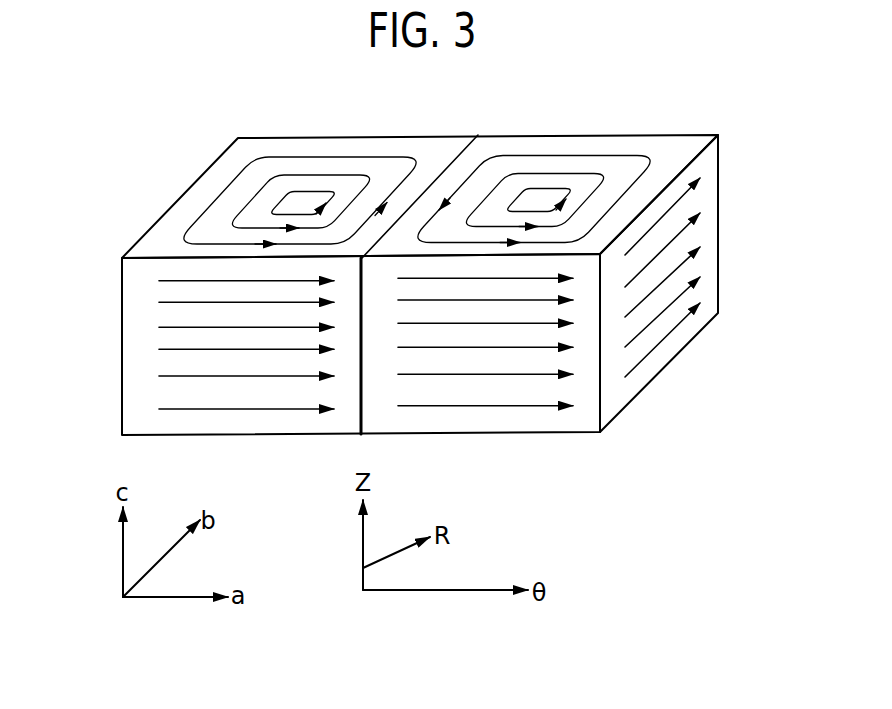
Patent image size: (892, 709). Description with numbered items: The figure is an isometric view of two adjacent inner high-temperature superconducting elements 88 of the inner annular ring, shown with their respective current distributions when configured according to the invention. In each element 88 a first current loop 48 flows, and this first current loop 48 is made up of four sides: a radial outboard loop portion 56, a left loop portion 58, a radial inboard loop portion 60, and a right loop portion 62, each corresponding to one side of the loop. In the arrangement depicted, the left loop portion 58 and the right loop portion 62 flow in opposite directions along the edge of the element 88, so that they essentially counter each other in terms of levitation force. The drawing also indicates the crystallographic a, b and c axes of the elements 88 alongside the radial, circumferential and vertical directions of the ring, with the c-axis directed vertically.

The first current loop 48 is at (255, 157).
The radial outboard loop portion 56 is at (376, 157).
The left loop portion 58 is at (228, 185).
The radial inboard loop portion 60 is at (200, 246).
The right loop portion 62 is at (412, 178).
The inner high-temperature superconducting element 88 is at (307, 207).